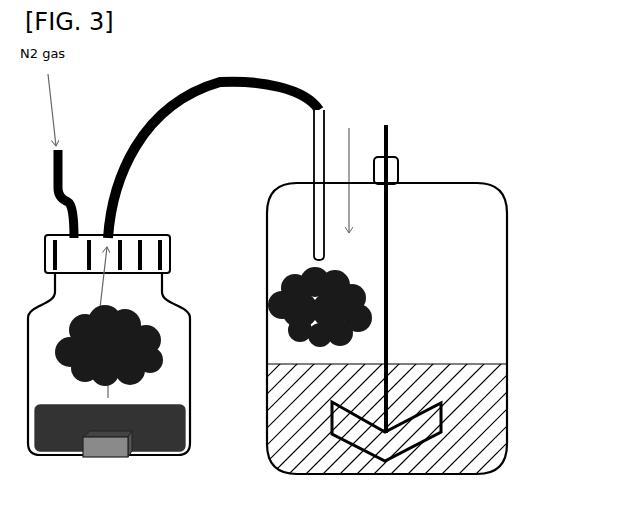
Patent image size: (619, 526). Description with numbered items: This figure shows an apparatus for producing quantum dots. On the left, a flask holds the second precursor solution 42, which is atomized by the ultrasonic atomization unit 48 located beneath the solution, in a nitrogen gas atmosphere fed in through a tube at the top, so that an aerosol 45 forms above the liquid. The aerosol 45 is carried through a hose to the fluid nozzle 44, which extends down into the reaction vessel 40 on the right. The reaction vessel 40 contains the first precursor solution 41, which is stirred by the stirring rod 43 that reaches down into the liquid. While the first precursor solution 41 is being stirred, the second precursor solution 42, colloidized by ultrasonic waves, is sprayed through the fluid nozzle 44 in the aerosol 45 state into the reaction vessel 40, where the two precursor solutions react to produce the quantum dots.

The reaction vessel 40 is at (505, 272).
The first precursor solution 41 is at (483, 438).
The second precursor solution 42 is at (165, 452).
The stirring rod 43 is at (385, 155).
The fluid nozzle 44 is at (317, 203).
The aerosol 45 is at (275, 336).
The ultrasonic atomization unit 48 is at (105, 457).